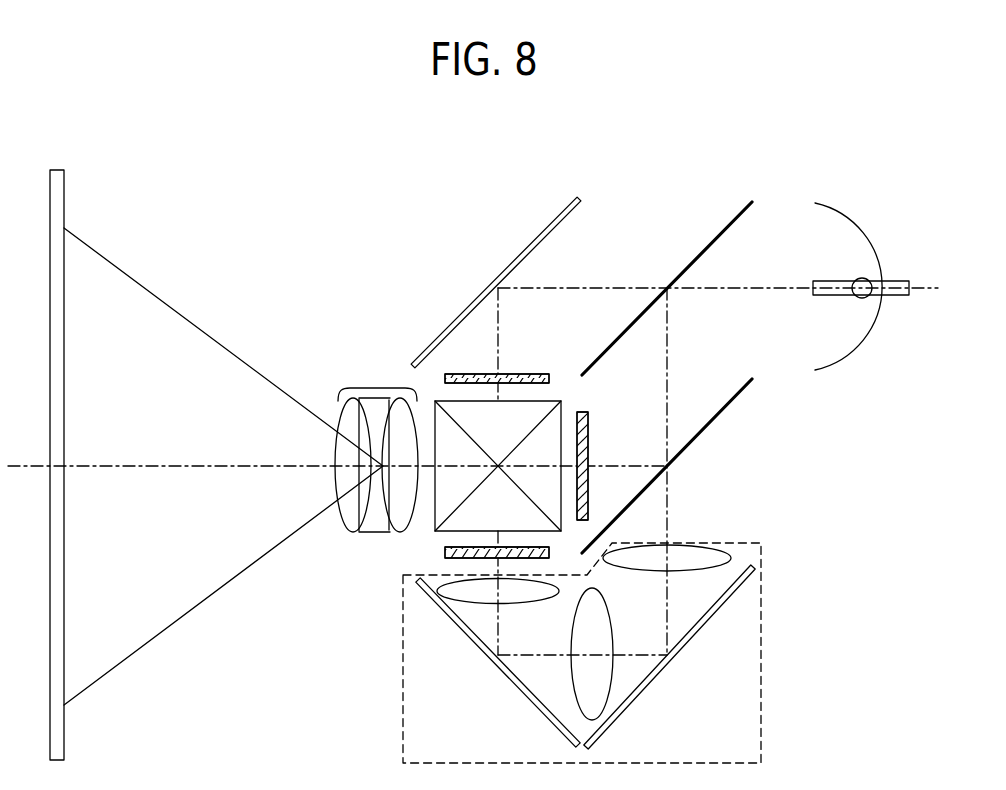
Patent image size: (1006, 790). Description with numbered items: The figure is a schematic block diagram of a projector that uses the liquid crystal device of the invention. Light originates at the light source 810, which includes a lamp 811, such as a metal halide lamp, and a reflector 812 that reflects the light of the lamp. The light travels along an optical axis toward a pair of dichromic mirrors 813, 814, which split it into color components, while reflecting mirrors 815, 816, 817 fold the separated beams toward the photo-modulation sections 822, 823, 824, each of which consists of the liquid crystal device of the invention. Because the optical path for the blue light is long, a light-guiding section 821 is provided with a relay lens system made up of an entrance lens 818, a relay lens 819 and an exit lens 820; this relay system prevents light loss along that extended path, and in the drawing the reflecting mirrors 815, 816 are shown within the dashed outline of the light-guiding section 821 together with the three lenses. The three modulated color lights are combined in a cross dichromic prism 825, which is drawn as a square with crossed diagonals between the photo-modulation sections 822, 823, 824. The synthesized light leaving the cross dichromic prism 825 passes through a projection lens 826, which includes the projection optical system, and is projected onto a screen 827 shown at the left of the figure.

The light source 810 is at (891, 259).
The lamp 811 is at (868, 267).
The reflector 812 is at (865, 337).
The dichromic mirror 813 is at (702, 228).
The dichromic mirror 814 is at (712, 420).
The reflecting mirror 815 is at (712, 617).
The reflecting mirror 816 is at (535, 703).
The reflecting mirror 817 is at (520, 250).
The entrance lens 818 is at (693, 552).
The relay lens 819 is at (603, 672).
The exit lens 820 is at (457, 592).
The light-guiding section 821 is at (598, 623).
The photo-modulation section 822 is at (549, 378).
The photo-modulation section 823 is at (590, 432).
The photo-modulation section 824 is at (445, 557).
The cross dichromic prism 825 is at (450, 499).
The projection lens 826 is at (372, 387).
The screen 827 is at (64, 660).